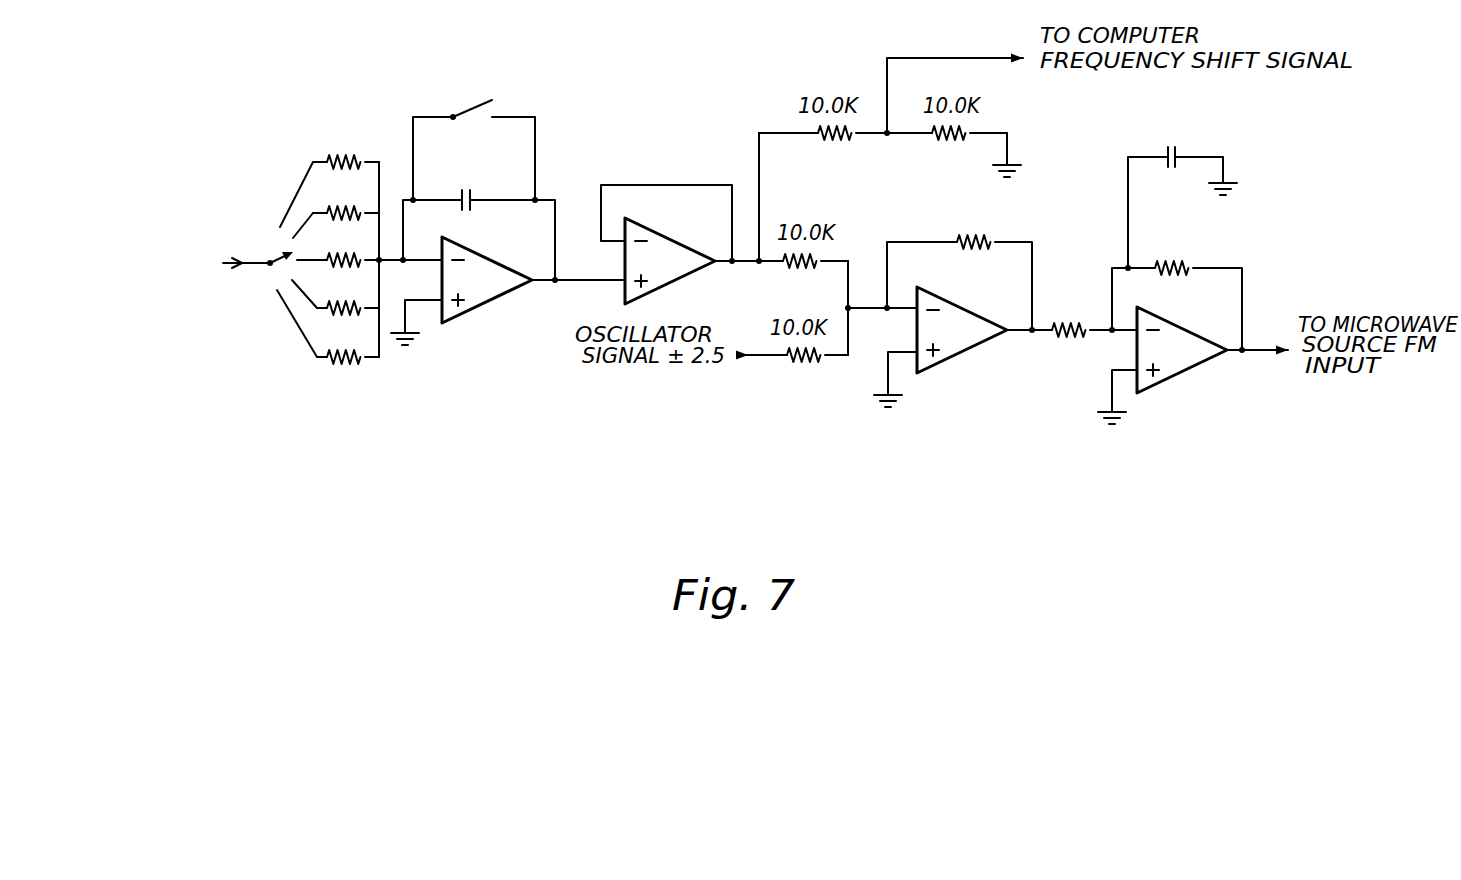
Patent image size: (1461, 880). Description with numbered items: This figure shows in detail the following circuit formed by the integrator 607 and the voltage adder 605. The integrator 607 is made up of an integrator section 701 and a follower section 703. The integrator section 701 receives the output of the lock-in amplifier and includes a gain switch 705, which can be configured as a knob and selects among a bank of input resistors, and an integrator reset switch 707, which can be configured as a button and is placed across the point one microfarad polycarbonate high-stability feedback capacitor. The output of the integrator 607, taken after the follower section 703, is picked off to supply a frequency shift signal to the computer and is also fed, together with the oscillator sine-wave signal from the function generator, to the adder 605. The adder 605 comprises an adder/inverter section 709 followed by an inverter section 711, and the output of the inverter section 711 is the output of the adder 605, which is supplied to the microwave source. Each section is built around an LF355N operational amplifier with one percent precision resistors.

The integrator 607 is at (745, 473).
The integrator section 701 is at (548, 370).
The follower section 703 is at (743, 373).
The gain switch 705 is at (290, 163).
The integrator reset switch 707 is at (507, 103).
The voltage adder 605 is at (1230, 523).
The adder/inverter section 709 is at (1017, 413).
The inverter section 711 is at (1253, 428).